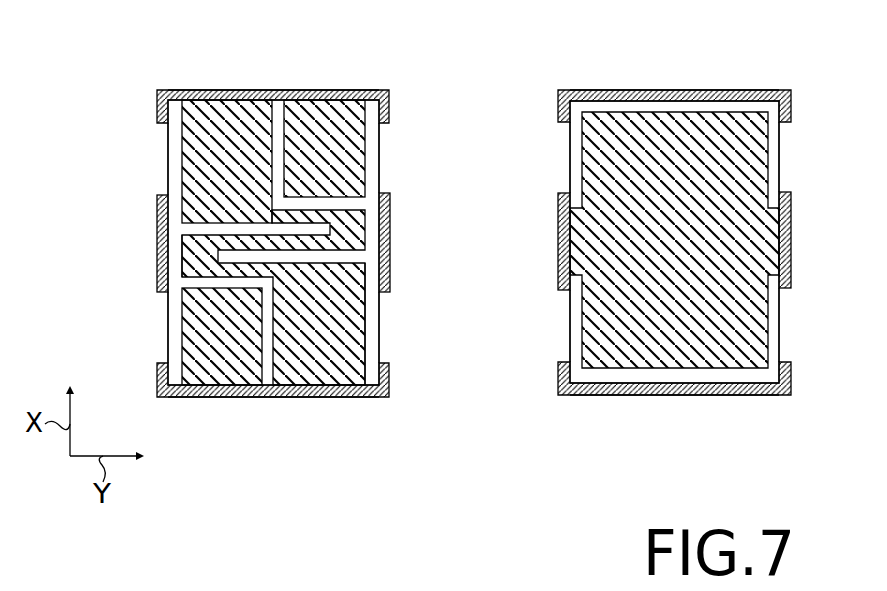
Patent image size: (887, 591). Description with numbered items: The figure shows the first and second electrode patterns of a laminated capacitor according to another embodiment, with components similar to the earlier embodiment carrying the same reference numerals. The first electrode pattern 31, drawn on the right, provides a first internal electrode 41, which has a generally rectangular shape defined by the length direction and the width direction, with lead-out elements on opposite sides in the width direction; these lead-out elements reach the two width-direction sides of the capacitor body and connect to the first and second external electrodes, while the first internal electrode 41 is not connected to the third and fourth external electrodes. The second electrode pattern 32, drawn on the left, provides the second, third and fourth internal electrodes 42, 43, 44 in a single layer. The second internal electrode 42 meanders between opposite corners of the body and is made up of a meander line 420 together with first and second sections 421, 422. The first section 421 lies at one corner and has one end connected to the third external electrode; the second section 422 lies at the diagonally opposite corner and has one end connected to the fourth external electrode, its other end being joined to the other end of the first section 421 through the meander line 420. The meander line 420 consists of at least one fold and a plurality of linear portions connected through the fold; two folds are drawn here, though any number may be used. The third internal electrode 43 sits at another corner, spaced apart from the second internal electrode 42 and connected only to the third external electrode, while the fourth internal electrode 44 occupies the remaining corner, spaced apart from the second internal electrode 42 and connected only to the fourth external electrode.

The first electrode pattern 31 is at (516, 126).
The second electrode pattern 32 is at (62, 127).
The first internal electrode 41 is at (750, 315).
The second internal electrode 42 is at (350, 318).
The third internal electrode 43 is at (190, 330).
The fourth internal electrode 44 is at (352, 147).
The meander line 420 is at (190, 257).
The first section 421 is at (356, 350).
The second section 422 is at (210, 142).